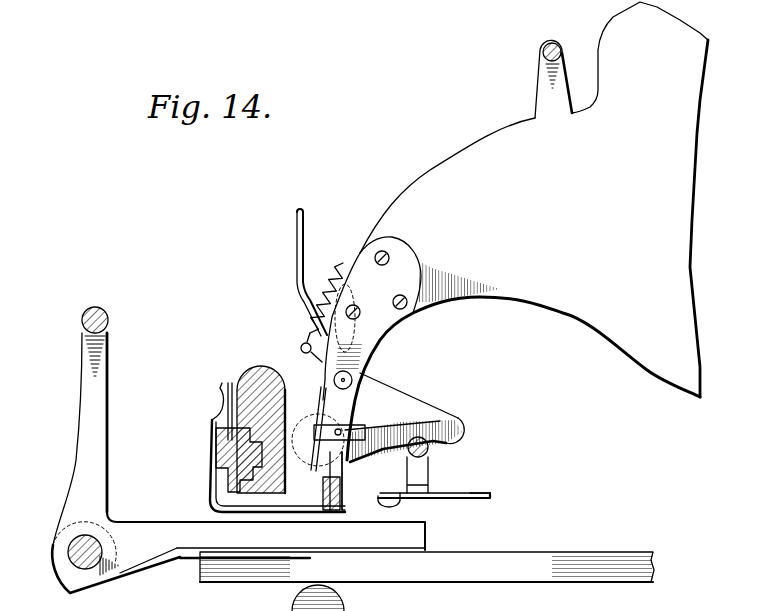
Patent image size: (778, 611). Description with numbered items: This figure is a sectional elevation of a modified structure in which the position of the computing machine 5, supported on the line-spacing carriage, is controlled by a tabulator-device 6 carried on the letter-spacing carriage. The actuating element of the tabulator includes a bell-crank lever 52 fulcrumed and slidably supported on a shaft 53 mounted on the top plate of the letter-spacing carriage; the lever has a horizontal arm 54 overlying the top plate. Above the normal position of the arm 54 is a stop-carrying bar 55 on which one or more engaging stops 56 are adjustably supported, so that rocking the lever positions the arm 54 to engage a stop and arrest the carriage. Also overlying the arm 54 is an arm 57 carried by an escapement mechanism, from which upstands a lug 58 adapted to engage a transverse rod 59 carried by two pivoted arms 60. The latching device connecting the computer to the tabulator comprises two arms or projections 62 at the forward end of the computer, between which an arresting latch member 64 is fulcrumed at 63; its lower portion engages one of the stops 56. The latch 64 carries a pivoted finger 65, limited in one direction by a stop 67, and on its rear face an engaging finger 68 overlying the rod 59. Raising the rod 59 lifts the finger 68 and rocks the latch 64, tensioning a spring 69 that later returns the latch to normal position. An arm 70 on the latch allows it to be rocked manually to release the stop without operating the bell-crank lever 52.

The computing machine 5 is at (527, 231).
The tabulator-device 6 is at (114, 522).
The bell-crank lever 52 is at (92, 437).
The shaft 53 is at (80, 550).
The horizontal arm 54 is at (415, 570).
The stop-carrying bar 55 is at (222, 460).
The engaging stops 56 is at (212, 428).
The arm 57 is at (478, 500).
The lug 58 is at (420, 479).
The transverse rod 59 is at (430, 452).
The arms 60 is at (396, 475).
The arms or projections 62 is at (363, 258).
The fulcrum 63 is at (356, 378).
The arresting stop or latch member 64 is at (348, 483).
The pivoted finger 65 is at (322, 480).
The stop 67 is at (312, 408).
The engaging finger 68 is at (462, 430).
The spring 69 is at (318, 320).
The arm 70 is at (297, 243).